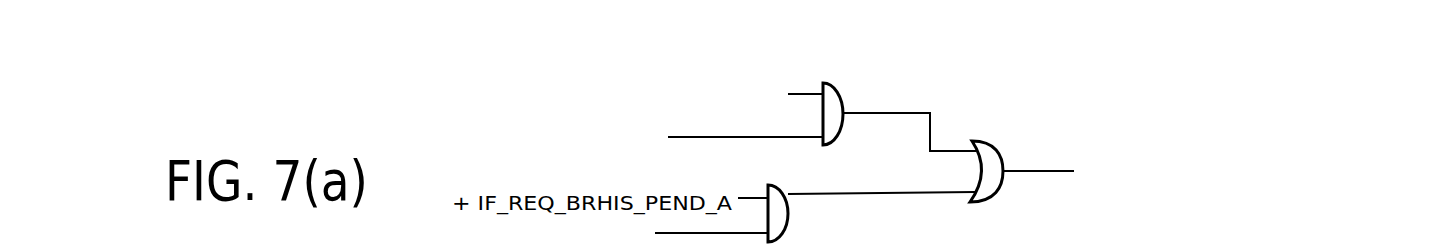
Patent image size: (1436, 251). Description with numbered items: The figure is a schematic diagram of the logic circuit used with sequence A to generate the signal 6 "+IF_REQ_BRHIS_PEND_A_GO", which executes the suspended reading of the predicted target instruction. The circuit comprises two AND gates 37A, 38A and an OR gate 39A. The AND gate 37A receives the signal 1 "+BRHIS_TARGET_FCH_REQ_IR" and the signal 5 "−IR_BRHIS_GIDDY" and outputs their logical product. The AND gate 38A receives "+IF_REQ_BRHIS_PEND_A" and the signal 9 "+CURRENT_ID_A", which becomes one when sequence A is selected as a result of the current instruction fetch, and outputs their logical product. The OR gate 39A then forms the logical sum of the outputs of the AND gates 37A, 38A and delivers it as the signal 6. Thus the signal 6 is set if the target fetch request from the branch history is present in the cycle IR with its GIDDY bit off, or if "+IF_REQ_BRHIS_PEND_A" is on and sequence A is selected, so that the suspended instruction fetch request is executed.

The AND gate 37A is at (842, 88).
The AND gate 38A is at (787, 209).
The OR gate 39A is at (997, 140).
The signal +BRHIS_TARGET_FCH_REQ_IR 1 is at (621, 101).
The signal −IR_BRHIS_GIDDY 5 is at (621, 141).
The signal +CURRENT_ID_A 9 is at (592, 236).
The signal +IF_REQ_BRHIS_PEND_A_GO 6 is at (1241, 169).